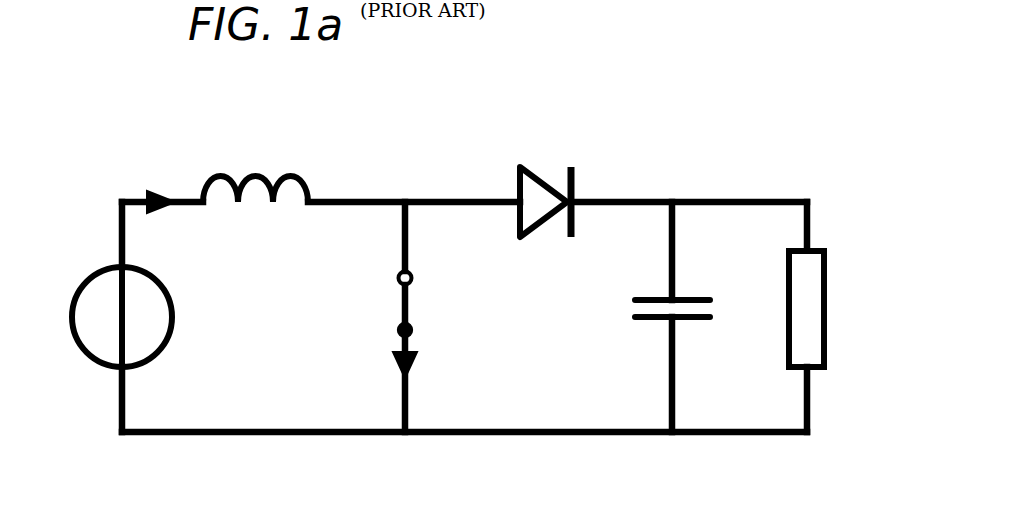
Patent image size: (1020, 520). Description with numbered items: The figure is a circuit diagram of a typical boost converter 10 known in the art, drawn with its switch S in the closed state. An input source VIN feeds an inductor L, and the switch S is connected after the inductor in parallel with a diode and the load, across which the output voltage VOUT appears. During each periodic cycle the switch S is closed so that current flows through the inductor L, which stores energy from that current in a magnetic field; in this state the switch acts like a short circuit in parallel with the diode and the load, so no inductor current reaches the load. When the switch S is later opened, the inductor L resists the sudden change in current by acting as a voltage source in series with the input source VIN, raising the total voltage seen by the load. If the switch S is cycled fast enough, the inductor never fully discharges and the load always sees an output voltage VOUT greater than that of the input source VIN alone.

The boost converter 10 is at (554, 62).
The inductor L is at (255, 214).
The switch S is at (397, 325).
The input voltage source VIN is at (97, 317).
The output voltage VOUT is at (846, 309).